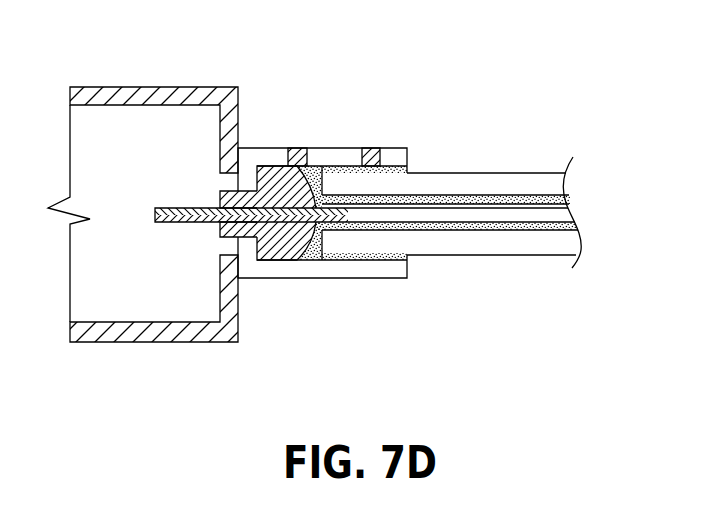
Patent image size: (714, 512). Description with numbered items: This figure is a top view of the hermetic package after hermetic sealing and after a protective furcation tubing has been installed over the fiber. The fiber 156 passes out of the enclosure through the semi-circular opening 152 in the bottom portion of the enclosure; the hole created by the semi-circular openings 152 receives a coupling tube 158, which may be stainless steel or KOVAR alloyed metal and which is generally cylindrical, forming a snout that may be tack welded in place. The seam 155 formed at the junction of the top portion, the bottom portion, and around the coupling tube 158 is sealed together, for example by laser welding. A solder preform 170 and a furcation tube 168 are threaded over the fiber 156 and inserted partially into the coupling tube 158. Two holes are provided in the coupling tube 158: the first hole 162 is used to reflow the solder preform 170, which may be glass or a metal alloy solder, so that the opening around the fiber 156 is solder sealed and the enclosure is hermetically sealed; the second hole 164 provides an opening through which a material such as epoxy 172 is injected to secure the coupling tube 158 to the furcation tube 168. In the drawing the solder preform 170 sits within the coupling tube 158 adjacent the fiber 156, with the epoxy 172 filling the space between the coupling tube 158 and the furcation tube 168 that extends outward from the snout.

The semi-circular opening 152 is at (220, 243).
The seam 155 is at (175, 87).
The fiber 156 is at (155, 213).
The coupling tube 158 is at (407, 270).
The first hole 162 is at (293, 148).
The second hole 164 is at (367, 148).
The furcation tube 168 is at (488, 173).
The solder preform 170 is at (268, 260).
The epoxy 172 is at (315, 260).